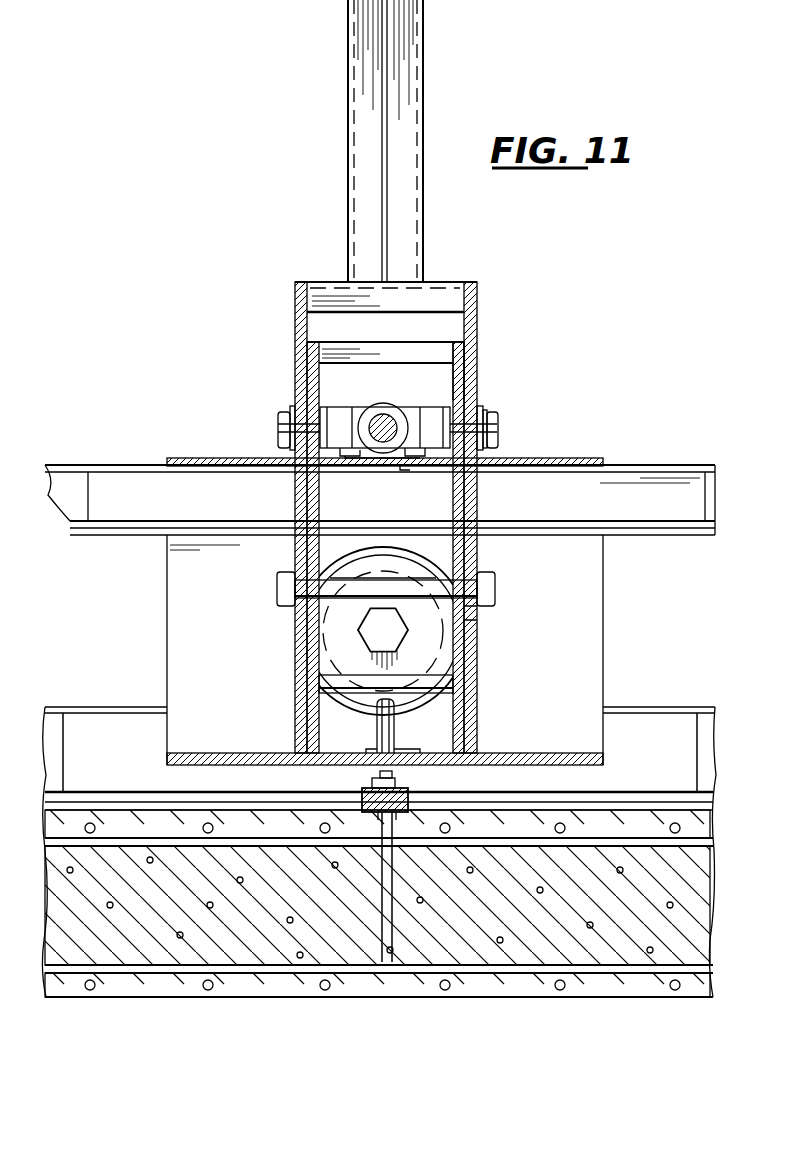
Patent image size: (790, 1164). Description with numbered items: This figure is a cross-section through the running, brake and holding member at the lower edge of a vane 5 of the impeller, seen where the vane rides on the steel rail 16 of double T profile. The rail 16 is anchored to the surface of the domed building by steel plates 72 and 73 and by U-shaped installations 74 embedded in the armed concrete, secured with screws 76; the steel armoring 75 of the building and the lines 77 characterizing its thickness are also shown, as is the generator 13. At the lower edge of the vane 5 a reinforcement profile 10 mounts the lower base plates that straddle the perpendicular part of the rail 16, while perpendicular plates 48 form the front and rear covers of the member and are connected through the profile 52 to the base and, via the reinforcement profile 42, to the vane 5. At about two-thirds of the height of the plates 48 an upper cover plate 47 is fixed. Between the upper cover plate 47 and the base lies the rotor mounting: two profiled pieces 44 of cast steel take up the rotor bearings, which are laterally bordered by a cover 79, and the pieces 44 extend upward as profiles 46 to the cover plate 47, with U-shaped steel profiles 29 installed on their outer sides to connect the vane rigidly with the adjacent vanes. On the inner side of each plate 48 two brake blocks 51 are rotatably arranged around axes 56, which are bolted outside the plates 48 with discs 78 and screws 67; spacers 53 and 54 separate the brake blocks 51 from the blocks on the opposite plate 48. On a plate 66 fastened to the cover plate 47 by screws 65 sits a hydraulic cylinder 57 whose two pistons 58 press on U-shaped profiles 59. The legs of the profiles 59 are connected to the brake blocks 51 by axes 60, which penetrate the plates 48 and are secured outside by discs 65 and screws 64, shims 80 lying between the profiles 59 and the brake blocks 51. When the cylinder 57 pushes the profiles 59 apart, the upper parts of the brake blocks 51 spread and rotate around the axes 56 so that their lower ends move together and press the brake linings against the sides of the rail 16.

The reinforcement profile 42 is at (405, 22).
The vane 5 is at (387, 60).
The perpendicular plate 48 is at (295, 288).
The profile 52 is at (318, 290).
The spacer 53 is at (332, 348).
The brake block 51 is at (460, 349).
The hydraulic cylinder 57 is at (383, 405).
The piston 58 is at (390, 425).
The U-shaped profile 59 is at (435, 408).
The screw 65 is at (291, 410).
The screw 64 is at (280, 428).
The shim 80 is at (480, 410).
The axis 60 is at (497, 432).
The upper cover plate 47 is at (592, 458).
The U-shaped profile 29 is at (640, 490).
The profile 46 is at (185, 563).
The axis 56 is at (345, 580).
The plate 66 is at (383, 468).
The screw 67 is at (490, 586).
The profiled piece 44 is at (340, 613).
The cover 79 is at (360, 632).
The disc 78 is at (482, 615).
The spacer 54 is at (440, 690).
The reinforcement profile 10 is at (397, 735).
The generator 13 is at (205, 755).
The steel rail 16 is at (108, 737).
The thickness lines 77 is at (245, 813).
The steel armoring 75 is at (320, 815).
The steel plate 72 is at (366, 818).
The U-shaped installation 74 is at (385, 816).
The steel plate 73 is at (400, 815).
The screw 76 is at (406, 779).